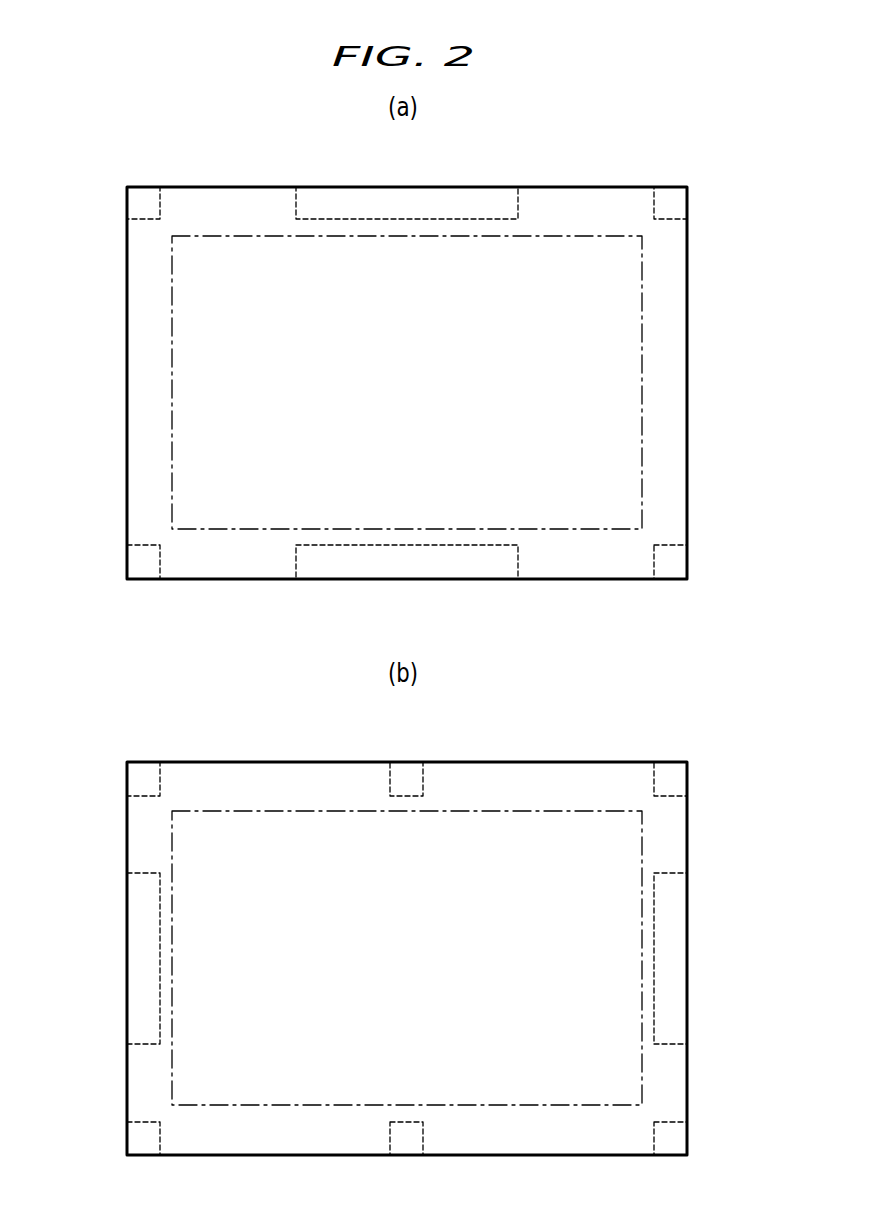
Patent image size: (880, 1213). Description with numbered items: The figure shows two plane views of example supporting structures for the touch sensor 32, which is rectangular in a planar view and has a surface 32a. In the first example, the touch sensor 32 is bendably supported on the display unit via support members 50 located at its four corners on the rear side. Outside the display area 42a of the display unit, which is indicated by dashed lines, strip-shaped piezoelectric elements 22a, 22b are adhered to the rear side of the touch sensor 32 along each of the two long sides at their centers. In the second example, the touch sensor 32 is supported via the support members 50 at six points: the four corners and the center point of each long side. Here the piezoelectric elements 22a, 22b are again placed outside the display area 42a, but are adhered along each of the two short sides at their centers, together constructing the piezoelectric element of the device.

The touch sensor 32 is at (688, 336).
The surface of substrate 32a is at (540, 325).
The display area 42a is at (642, 415).
The piezoelectric element 22a is at (296, 208).
The piezoelectric element 22b is at (518, 558).
The support member 50 is at (141, 219).